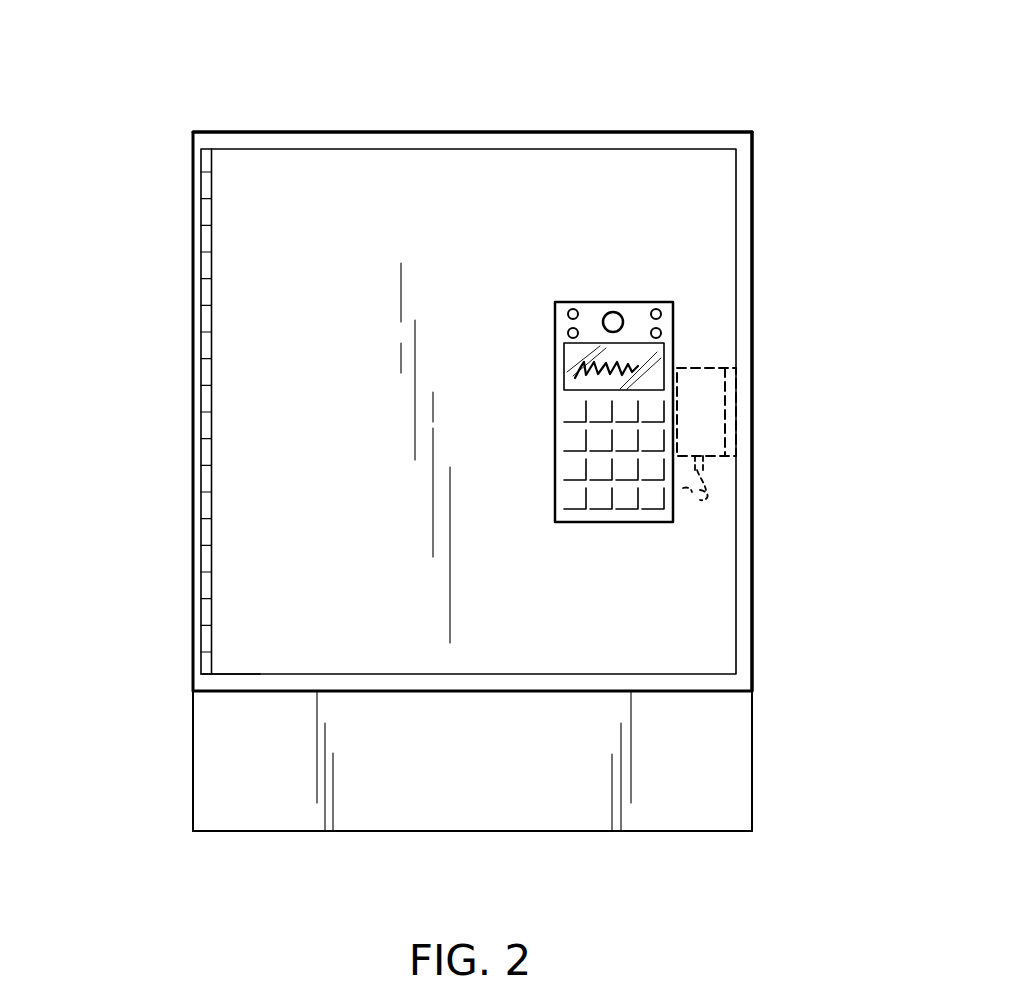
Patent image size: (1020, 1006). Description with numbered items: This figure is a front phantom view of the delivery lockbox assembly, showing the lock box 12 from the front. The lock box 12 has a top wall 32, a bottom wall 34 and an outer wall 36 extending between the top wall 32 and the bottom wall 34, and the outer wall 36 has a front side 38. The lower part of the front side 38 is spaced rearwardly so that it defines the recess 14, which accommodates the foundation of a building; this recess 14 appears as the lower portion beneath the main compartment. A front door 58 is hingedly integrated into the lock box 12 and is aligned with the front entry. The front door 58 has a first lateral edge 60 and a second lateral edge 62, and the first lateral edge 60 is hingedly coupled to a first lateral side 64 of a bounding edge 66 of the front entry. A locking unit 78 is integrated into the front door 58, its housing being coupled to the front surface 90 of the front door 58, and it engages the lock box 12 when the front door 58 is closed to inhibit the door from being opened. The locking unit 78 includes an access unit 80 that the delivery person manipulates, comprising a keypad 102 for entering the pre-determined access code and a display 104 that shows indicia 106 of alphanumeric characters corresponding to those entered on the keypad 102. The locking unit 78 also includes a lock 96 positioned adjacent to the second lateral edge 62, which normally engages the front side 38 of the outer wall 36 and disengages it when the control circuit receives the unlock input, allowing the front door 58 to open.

The lock box 12 is at (749, 106).
The recess 14 is at (709, 755).
The top wall 32 is at (515, 131).
The bottom wall 34 is at (408, 832).
The outer wall 36 is at (753, 402).
The front side 38 is at (742, 619).
The front door 58 is at (412, 182).
The first lateral edge 60 is at (200, 425).
The second lateral edge 62 is at (737, 283).
The first lateral side 64 is at (200, 507).
The bounding edge 66 is at (250, 675).
The locking unit 78 is at (624, 270).
The access unit 80 is at (636, 507).
The front surface 90 is at (307, 184).
The lock 96 is at (717, 456).
The keypad 102 is at (577, 438).
The display 104 is at (655, 357).
The indicia 106 is at (630, 347).